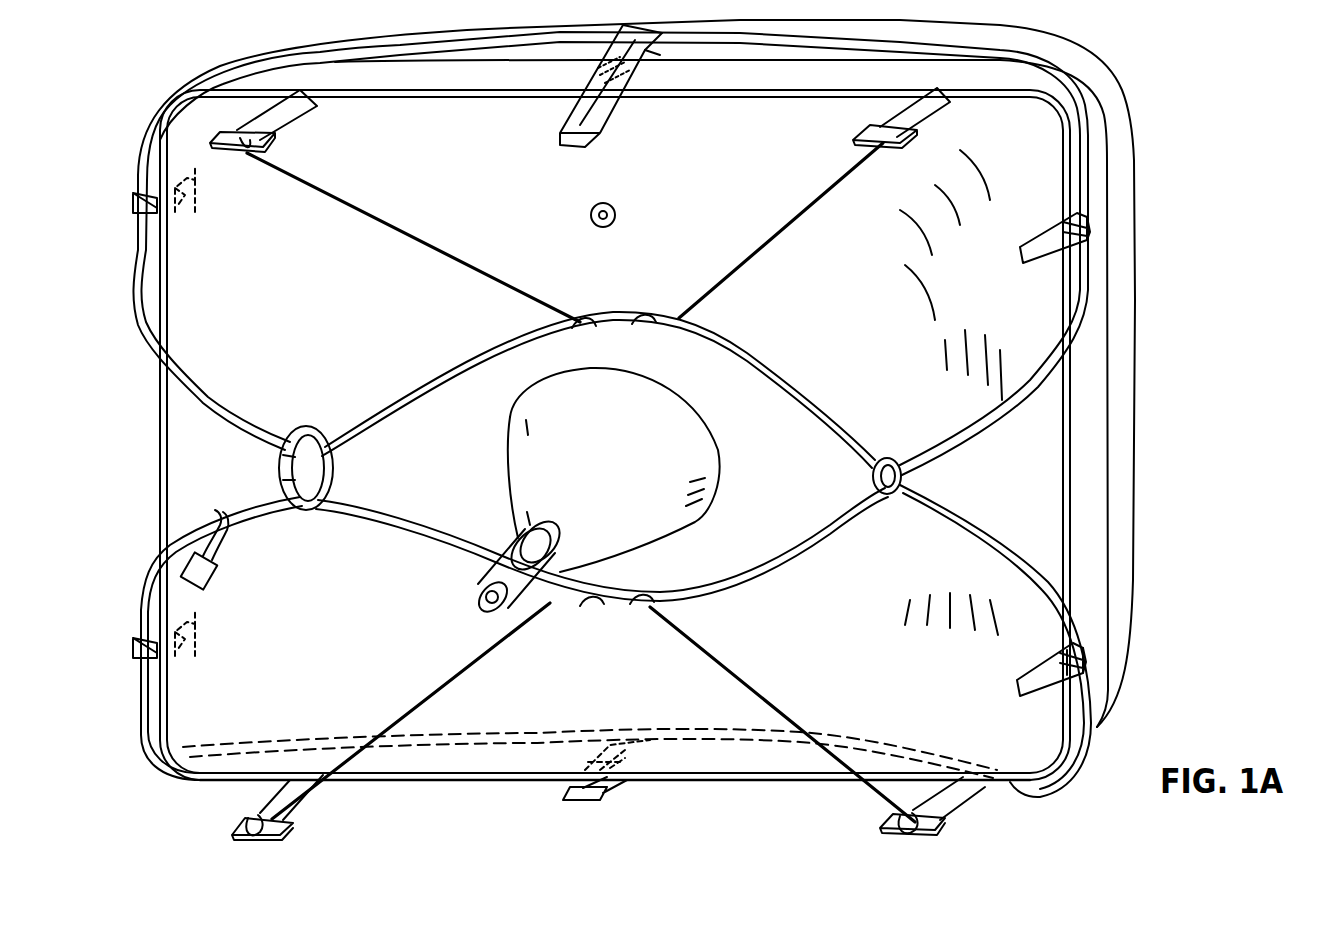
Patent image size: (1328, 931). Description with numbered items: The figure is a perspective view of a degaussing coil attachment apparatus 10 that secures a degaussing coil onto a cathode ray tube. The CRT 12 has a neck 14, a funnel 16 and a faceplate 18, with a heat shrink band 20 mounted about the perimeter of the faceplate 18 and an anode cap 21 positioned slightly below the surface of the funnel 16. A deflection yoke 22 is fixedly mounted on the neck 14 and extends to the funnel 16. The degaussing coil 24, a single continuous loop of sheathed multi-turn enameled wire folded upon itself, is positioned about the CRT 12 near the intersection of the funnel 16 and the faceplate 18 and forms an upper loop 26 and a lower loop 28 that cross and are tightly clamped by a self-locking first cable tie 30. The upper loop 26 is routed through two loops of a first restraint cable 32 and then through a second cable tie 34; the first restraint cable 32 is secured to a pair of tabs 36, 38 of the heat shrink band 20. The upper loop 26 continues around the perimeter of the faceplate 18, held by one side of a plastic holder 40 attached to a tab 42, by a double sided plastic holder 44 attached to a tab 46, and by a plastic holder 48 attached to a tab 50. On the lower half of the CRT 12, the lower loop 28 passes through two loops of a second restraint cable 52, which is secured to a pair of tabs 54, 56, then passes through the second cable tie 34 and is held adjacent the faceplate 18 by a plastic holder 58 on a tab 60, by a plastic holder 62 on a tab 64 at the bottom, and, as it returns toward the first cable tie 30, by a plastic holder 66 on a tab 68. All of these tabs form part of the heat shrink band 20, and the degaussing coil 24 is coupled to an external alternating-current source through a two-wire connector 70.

The degaussing coil attachment apparatus 10 is at (438, 838).
The CRT 12 is at (128, 478).
The neck 14 is at (507, 617).
The funnel 16 is at (886, 640).
The faceplate 18 is at (1135, 452).
The heat shrink band 20 is at (1097, 334).
The anode cap 21 is at (620, 218).
The deflection yoke 22 is at (665, 530).
The degaussing coil 24 is at (703, 36).
The upper loop 26 is at (755, 359).
The lower loop 28 is at (838, 521).
The first cable tie 30 is at (896, 500).
The first restraint cable 32 is at (780, 247).
The second cable tie 34 is at (333, 469).
The tab 36 is at (290, 120).
The tab 38 is at (940, 110).
The plastic holder 40 is at (133, 205).
The tab 42 is at (190, 208).
The double sided plastic holder 44 is at (588, 150).
The tab 46 is at (652, 57).
The plastic holder 48 is at (1060, 230).
The tab 50 is at (1082, 222).
The second restraint cable 52 is at (730, 657).
The tab 54 is at (958, 802).
The tab 56 is at (310, 810).
The plastic holder 58 is at (132, 653).
The tab 60 is at (190, 655).
The plastic holder 62 is at (600, 800).
The tab 64 is at (630, 740).
The plastic holder 66 is at (1018, 678).
The tab 68 is at (1057, 659).
The two-wire connector 70 is at (215, 579).